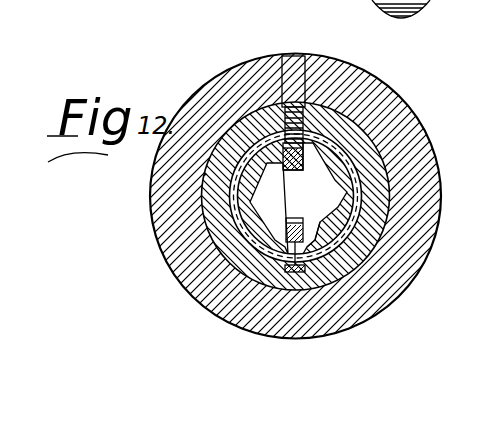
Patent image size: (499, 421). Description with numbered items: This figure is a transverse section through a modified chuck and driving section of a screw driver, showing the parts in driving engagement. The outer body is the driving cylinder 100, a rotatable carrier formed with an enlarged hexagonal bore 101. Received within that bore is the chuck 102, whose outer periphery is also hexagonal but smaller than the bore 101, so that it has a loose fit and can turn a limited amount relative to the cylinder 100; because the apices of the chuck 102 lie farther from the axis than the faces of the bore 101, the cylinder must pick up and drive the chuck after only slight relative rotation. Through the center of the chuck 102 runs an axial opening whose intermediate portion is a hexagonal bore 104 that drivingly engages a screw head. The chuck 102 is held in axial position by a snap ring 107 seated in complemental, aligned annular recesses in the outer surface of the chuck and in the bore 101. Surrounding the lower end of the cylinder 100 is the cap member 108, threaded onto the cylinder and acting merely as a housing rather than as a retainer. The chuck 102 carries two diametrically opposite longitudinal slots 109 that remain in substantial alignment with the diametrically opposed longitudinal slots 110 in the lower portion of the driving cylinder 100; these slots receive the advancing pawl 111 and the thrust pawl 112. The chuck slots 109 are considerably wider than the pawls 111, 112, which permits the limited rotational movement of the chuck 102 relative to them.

The driving cylinder 100 is at (358, 87).
The hexagonal bore 101 is at (205, 175).
The chuck 102 is at (332, 168).
The hexagonal bore 104 is at (268, 213).
The snap ring 107 is at (358, 224).
The cap member 108 is at (388, 102).
The longitudinal slots 109 is at (320, 268).
The longitudinal slots 110 is at (292, 107).
The advancing pawl 111 is at (297, 272).
The thrust pawl 112 is at (302, 57).